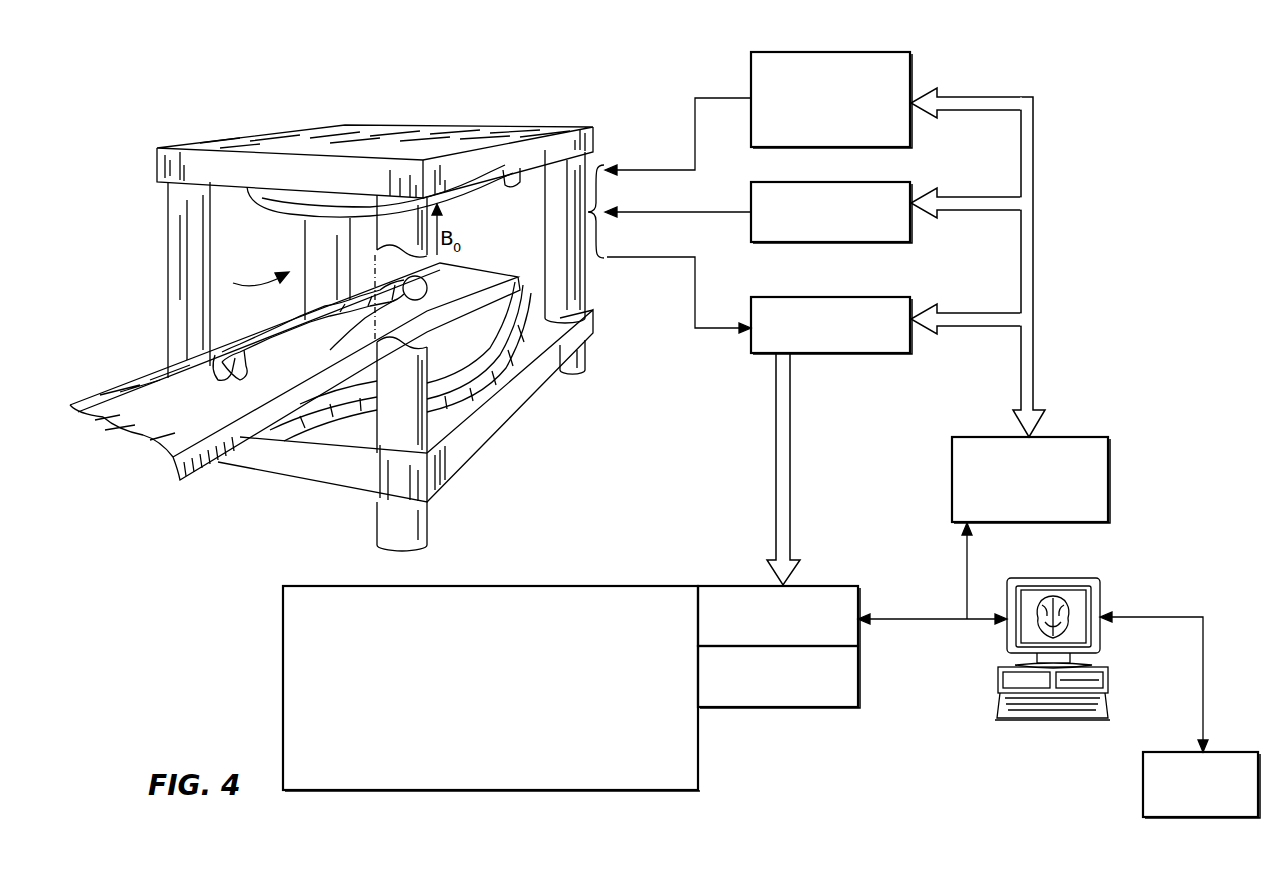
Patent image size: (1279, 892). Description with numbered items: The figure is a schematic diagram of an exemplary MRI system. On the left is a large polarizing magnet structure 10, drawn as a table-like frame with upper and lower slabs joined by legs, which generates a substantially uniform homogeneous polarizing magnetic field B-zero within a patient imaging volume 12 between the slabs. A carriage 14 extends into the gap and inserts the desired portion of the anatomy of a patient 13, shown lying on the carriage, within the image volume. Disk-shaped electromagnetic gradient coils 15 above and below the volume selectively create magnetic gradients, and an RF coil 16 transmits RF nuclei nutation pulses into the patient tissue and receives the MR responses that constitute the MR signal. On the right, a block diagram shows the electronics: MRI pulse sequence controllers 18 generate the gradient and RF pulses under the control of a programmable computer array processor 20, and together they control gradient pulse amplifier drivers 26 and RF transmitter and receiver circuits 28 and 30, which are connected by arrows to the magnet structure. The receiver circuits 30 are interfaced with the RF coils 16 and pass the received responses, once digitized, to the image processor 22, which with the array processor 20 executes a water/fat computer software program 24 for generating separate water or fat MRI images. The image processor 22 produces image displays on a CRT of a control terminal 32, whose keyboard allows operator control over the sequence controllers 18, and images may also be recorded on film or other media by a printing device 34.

The polarizing magnet structure 10 is at (493, 133).
The patient imaging volume 12 is at (258, 271).
The patient 13 is at (340, 298).
The carriage 14 is at (152, 407).
The electromagnetic gradient coils 15 is at (487, 196).
The RF coil 16 is at (513, 187).
The MRI pulse sequence controller 18 is at (952, 495).
The array processor 20 is at (821, 709).
The image processor 22 is at (828, 587).
The water/fat computer software program 24 is at (481, 586).
The gradient pulse amplifier drivers 26 is at (751, 82).
The RF transmitter circuits 28 is at (863, 182).
The RF receiver circuits 30 is at (864, 297).
The control terminal 32 is at (1033, 706).
The printing device 34 is at (1143, 791).